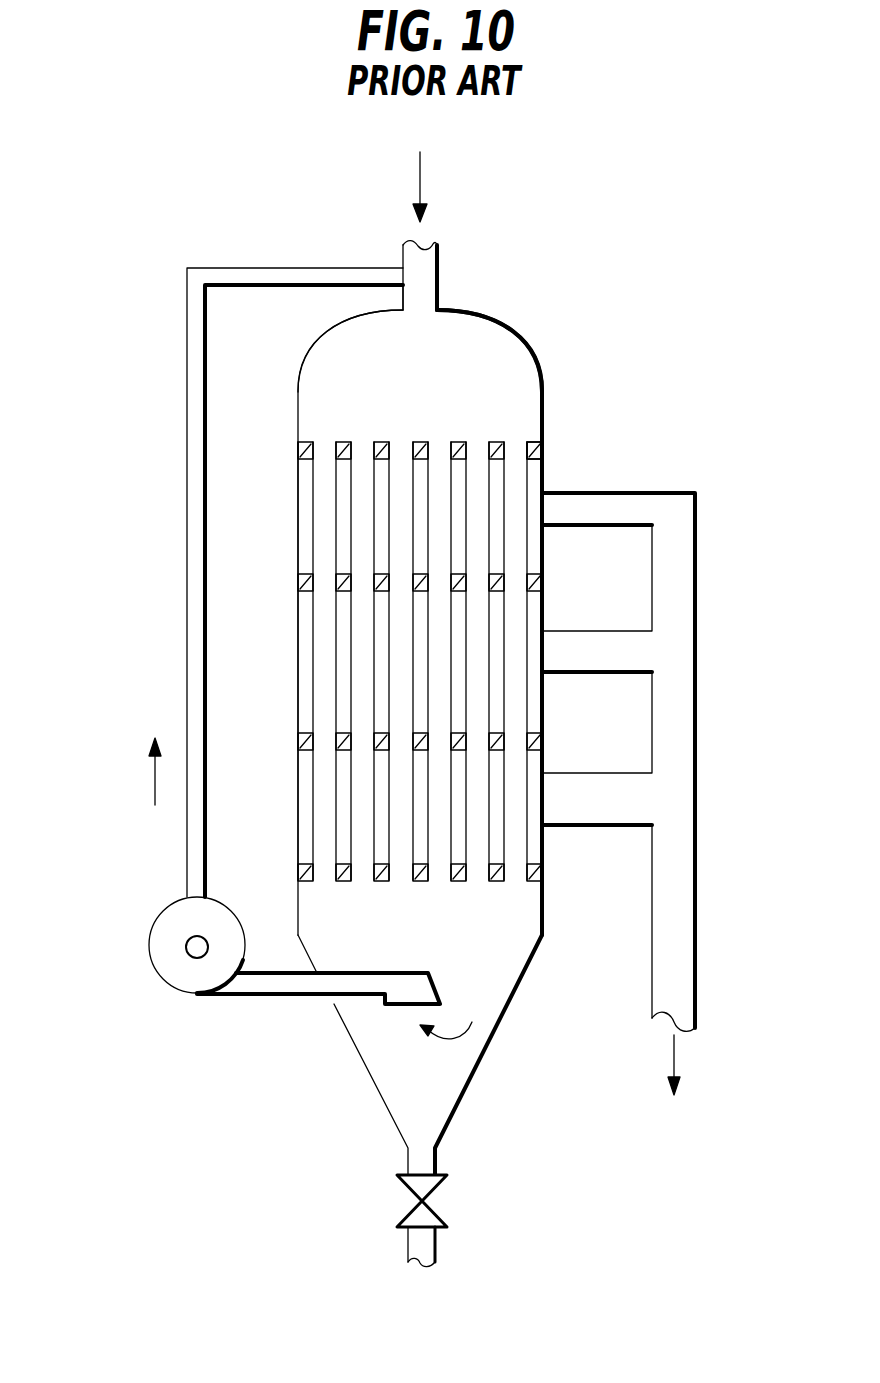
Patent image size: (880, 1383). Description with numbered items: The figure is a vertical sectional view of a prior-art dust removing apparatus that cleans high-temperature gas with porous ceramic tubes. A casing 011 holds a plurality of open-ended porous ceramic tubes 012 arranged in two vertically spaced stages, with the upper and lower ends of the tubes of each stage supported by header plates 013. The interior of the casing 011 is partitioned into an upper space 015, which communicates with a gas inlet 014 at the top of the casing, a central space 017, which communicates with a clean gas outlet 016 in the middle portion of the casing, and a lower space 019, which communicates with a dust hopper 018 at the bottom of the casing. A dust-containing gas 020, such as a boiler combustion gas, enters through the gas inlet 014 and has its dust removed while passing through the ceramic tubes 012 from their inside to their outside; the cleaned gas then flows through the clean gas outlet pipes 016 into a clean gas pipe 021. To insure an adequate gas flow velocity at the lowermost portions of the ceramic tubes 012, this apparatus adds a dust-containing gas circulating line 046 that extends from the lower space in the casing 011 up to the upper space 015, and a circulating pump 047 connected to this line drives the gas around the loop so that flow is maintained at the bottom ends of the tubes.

The casing 011 is at (297, 667).
The porous ceramic tubes 012 is at (320, 505).
The header plates 013 is at (538, 452).
The gas inlet 014 is at (437, 277).
The upper space 015 is at (540, 388).
The clean gas outlet 016 is at (596, 505).
The central space 017 is at (303, 610).
The dust hopper 018 is at (376, 1092).
The lower space 019 is at (477, 935).
The dust-containing gas 020 is at (423, 193).
The clean gas pipe 021 is at (670, 719).
The dust-containing gas circulating line 046 is at (197, 475).
The circulating pump 047 is at (153, 967).